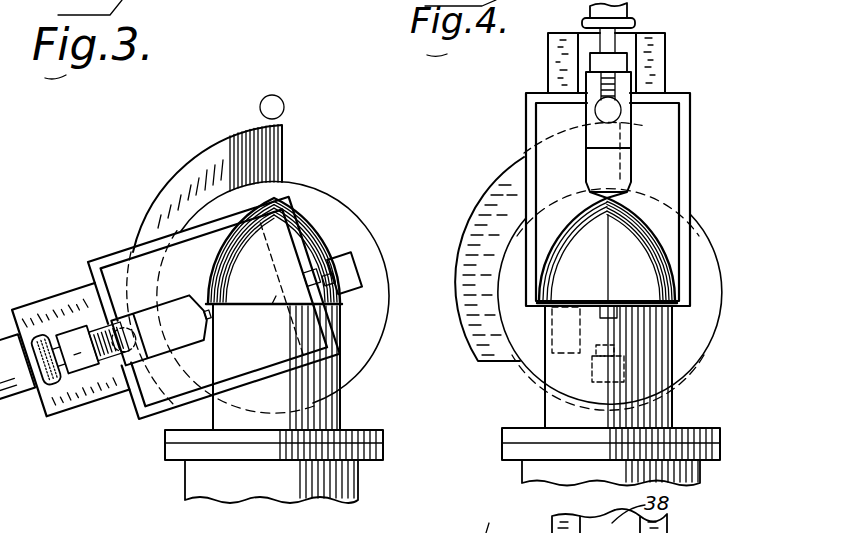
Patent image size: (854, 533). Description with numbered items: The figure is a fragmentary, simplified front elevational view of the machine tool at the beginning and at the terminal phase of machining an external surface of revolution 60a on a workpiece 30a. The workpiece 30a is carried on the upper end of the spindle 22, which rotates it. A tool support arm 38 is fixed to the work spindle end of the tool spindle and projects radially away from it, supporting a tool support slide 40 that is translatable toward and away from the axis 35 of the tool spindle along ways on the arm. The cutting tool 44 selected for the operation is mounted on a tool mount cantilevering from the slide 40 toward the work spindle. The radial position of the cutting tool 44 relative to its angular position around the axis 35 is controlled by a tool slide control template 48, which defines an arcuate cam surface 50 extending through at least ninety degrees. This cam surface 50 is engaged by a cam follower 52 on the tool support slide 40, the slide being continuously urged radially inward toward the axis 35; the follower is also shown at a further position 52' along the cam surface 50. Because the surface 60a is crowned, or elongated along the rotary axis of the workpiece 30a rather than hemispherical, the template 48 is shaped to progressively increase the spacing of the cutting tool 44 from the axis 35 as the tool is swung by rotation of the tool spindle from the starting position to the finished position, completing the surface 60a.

In FIG. 3, the spindle 22 is at (360, 483).
In FIG. 4, the spindle 22 is at (530, 476).
In FIG. 3, the workpiece 30a is at (338, 238).
In FIG. 3, the axis of the tool spindle 35 is at (272, 304).
In FIG. 4, the axis of the tool spindle 35 is at (608, 296).
In FIG. 3, the tool support arm 38 is at (70, 416).
In FIG. 4, the tool support arm 38 is at (657, 70).
In FIG. 3, the tool support slide 40 is at (142, 422).
In FIG. 4, the tool support slide 40 is at (540, 124).
In FIG. 3, the cutting tool 44 is at (211, 316).
In FIG. 4, the cutting tool 44 is at (588, 218).
In FIG. 3, the tool slide control template 48 is at (178, 183).
In FIG. 4, the tool slide control template 48 is at (499, 185).
In FIG. 3, the arcuate cam surface 50 is at (205, 147).
In FIG. 3, the cam follower 52 is at (94, 310).
In FIG. 3, the pivot ball alternate position 52' is at (272, 83).
In FIG. 3, the external surface of revolution 60a is at (298, 213).
In FIG. 4, the external surface of revolution 60a is at (658, 234).